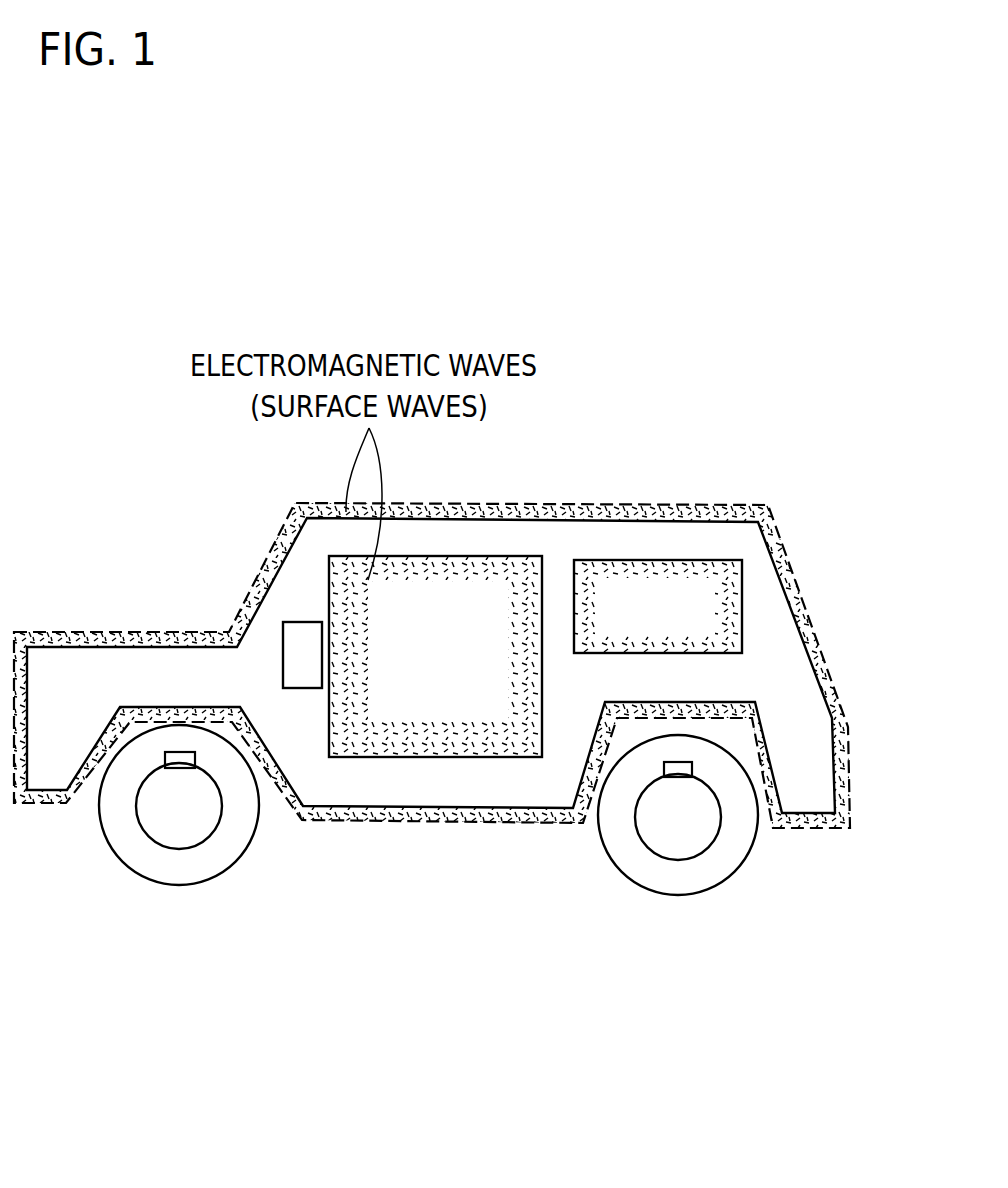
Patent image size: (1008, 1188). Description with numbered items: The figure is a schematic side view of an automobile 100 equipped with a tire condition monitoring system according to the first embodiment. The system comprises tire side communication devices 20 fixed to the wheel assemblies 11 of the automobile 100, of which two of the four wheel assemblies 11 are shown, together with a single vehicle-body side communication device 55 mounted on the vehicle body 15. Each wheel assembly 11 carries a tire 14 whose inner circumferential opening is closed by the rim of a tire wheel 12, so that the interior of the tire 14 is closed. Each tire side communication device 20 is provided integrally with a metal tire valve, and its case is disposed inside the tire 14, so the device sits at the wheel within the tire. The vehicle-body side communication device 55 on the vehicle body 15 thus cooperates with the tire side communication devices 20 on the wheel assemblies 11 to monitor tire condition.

The automobile 100 is at (583, 472).
The vehicle body 15 is at (785, 677).
The vehicle-body side communication device 55 is at (270, 645).
The wheel assembly 11 is at (152, 975).
The tire wheel 12 is at (182, 823).
The tire 14 is at (132, 852).
The tire side communication device 20 is at (178, 768).